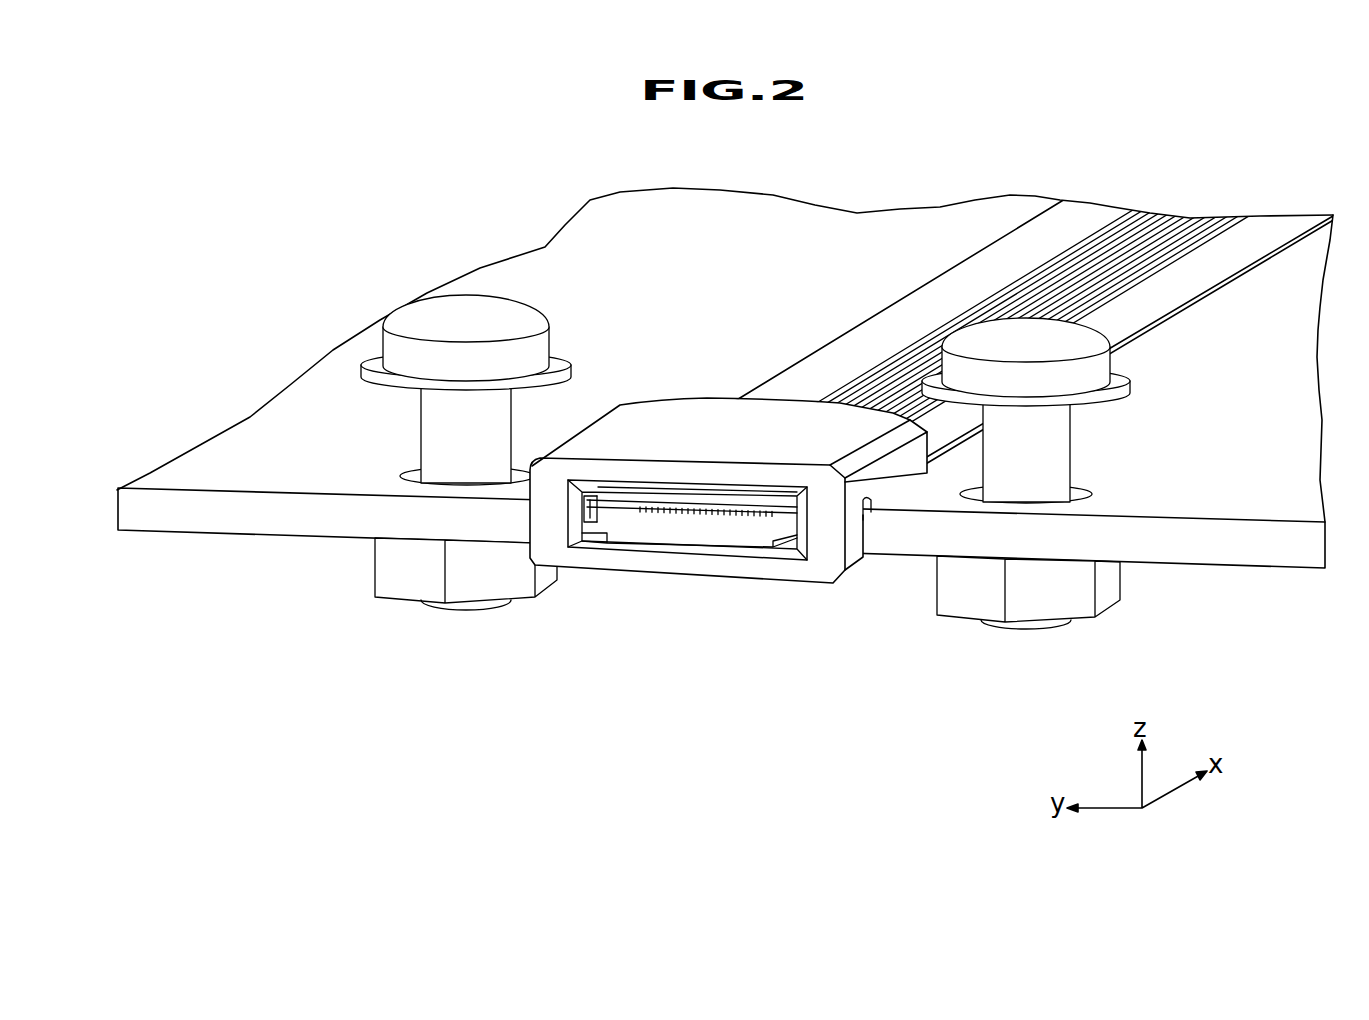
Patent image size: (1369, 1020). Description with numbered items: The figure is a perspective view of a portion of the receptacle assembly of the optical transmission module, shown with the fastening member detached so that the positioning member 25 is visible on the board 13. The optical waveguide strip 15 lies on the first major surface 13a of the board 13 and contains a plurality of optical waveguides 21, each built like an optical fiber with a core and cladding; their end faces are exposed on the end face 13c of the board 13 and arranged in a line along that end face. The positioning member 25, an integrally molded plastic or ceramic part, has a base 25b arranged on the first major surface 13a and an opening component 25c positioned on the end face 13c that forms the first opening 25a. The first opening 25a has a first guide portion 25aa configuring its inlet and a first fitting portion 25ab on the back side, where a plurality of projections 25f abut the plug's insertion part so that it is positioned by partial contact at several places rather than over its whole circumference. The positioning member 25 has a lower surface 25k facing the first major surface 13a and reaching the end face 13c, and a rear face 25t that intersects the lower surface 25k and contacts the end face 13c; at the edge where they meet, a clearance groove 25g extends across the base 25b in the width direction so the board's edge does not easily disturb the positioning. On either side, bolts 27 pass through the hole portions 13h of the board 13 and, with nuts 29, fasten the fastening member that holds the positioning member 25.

The board 13 is at (1155, 545).
The first major surface of the board 13a is at (1215, 505).
The end face of the board 13c is at (925, 535).
The hole portions of the board 13h is at (393, 473).
The optical waveguide strip 15 is at (1035, 296).
The optical waveguides 21 is at (1127, 227).
The positioning member 25 is at (759, 560).
The first opening 25a is at (594, 608).
The first guide portion 25aa is at (603, 520).
The first fitting portion 25ab is at (620, 515).
The base 25b is at (883, 482).
The opening component 25c is at (790, 533).
The projections 25f is at (767, 547).
The clearance groove 25g is at (865, 505).
The lower surface 25k is at (917, 477).
The rear face 25t is at (867, 500).
The bolts 27 is at (460, 310).
The nuts 29 is at (407, 578).